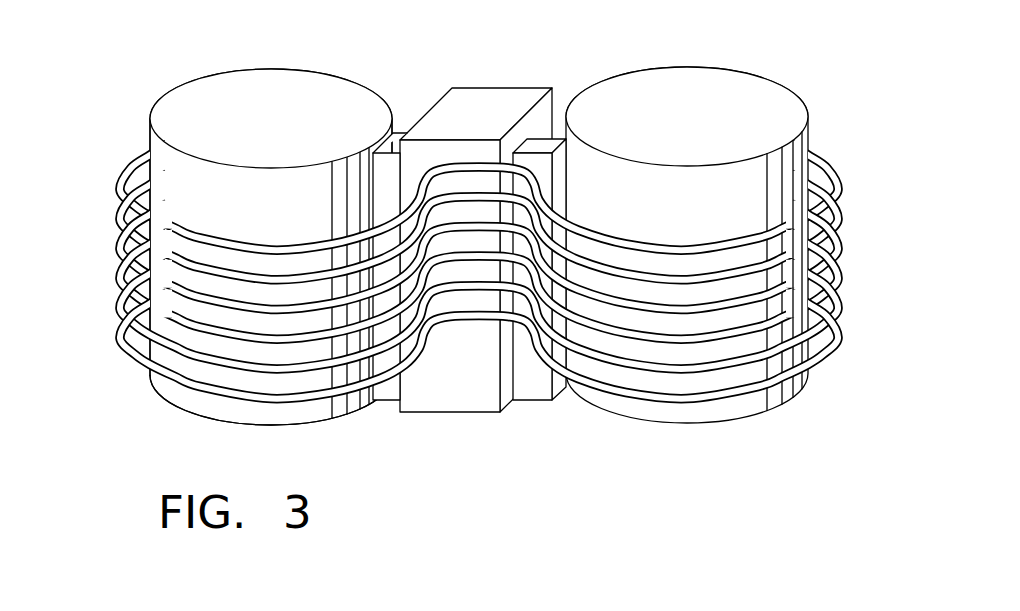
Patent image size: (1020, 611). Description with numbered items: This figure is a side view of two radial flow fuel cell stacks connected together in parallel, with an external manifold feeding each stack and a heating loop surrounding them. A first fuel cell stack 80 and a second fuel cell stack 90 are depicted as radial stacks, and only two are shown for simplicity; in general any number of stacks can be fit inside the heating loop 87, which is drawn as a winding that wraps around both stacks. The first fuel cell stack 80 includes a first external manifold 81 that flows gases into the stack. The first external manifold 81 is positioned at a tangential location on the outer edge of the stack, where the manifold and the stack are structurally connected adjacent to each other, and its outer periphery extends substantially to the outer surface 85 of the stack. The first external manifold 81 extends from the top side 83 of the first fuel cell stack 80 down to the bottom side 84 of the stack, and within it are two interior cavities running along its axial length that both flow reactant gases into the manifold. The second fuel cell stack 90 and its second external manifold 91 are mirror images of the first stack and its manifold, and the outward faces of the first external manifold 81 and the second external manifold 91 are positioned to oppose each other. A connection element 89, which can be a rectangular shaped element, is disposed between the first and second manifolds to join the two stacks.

The first fuel cell stack 80 is at (225, 242).
The first external manifold 81 is at (394, 138).
The top side of fuel cell stack 83 is at (216, 72).
The bottom side of fuel cell stack 84 is at (258, 426).
The outer surface of fuel cell stack 85 is at (207, 198).
The heating loop 87 is at (841, 183).
The connection element 89 is at (479, 107).
The second fuel cell stack 90 is at (777, 167).
The second external manifold 91 is at (547, 140).